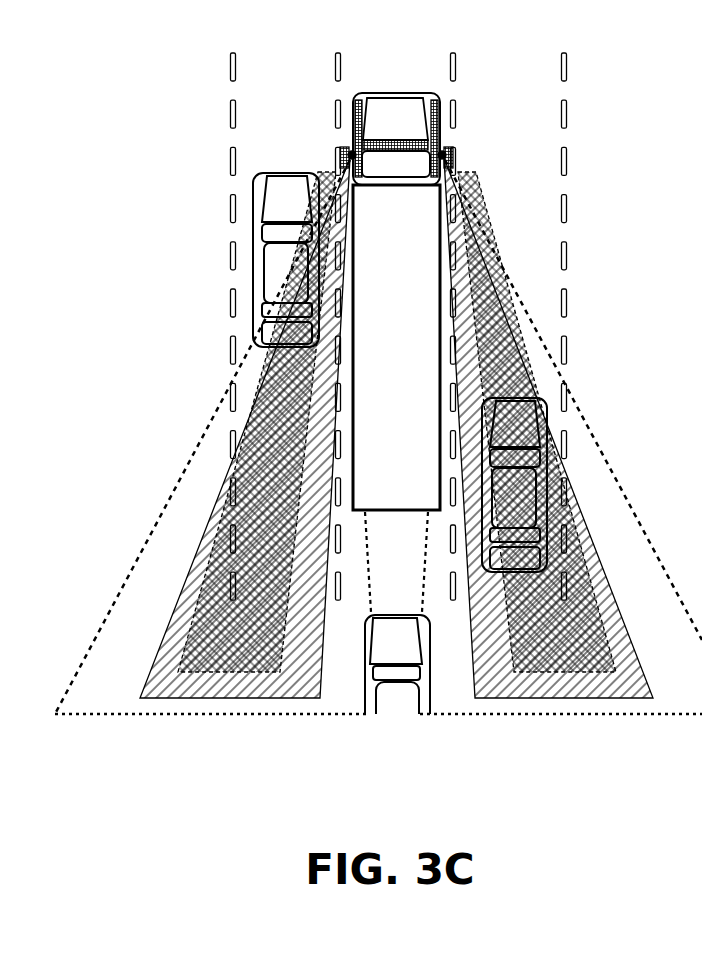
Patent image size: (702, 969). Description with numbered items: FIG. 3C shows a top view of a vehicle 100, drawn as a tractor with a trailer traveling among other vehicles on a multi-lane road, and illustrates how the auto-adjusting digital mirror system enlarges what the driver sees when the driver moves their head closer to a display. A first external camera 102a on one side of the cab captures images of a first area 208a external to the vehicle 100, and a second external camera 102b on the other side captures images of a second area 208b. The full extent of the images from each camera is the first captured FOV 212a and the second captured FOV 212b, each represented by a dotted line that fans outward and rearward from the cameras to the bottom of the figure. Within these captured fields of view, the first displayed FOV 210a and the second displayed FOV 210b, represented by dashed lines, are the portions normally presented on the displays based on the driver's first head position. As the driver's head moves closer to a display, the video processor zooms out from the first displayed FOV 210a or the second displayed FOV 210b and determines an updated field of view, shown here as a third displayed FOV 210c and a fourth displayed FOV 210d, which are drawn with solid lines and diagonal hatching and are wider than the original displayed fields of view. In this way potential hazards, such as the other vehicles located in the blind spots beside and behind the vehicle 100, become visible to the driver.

The vehicle 100 is at (402, 93).
The first external camera 102a is at (351, 153).
The second external camera 102b is at (443, 153).
The first area 208a is at (184, 289).
The second area 208b is at (617, 289).
The first displayed FOV 210a is at (243, 663).
The second displayed FOV 210b is at (573, 665).
The third displayed FOV 210c is at (163, 678).
The fourth displayed FOV 210d is at (497, 662).
The first captured FOV 212a is at (98, 697).
The second captured FOV 212b is at (682, 697).